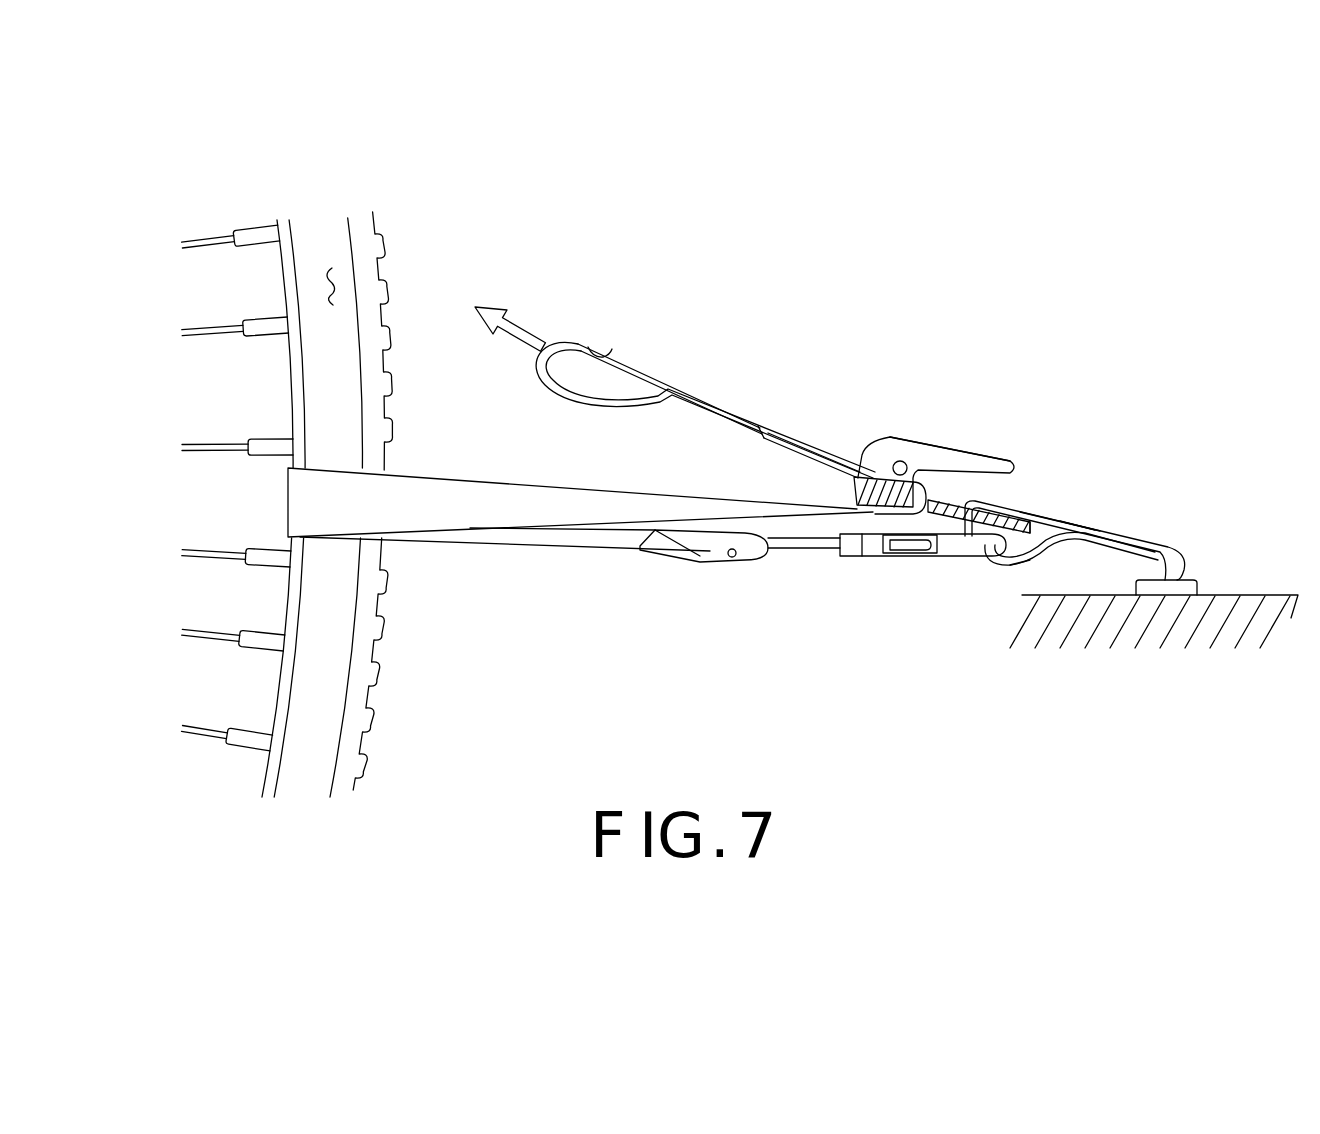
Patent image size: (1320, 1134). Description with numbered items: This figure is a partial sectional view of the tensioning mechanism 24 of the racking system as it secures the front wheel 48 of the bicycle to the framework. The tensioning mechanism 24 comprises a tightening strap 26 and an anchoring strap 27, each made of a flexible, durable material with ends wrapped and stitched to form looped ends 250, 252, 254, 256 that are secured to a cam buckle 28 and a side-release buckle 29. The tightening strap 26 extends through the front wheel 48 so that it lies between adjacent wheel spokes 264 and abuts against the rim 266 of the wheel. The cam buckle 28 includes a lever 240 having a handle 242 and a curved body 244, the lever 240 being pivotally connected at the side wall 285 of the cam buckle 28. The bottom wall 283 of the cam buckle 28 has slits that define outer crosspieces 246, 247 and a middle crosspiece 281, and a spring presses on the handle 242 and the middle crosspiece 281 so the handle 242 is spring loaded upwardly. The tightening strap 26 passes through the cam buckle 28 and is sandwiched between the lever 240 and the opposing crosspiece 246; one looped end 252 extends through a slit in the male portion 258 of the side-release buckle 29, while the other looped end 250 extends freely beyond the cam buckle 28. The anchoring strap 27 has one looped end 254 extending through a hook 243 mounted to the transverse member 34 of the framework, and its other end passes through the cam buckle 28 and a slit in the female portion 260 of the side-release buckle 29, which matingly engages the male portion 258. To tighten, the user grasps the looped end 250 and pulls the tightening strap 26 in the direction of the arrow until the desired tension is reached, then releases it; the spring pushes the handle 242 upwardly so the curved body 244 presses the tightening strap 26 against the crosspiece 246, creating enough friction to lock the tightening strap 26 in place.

The tensioning mechanism 24 is at (1139, 316).
The tightening strap 26 is at (463, 556).
The anchoring strap 27 is at (985, 585).
The cam buckle 28 is at (945, 424).
The side-release buckle 29 is at (857, 572).
The transverse member 34 is at (1293, 613).
The front wheel 48 is at (333, 287).
The lever 240 is at (869, 430).
The handle 242 is at (995, 497).
The hook 243 is at (1190, 577).
The curved body 244 is at (847, 448).
The outer crosspiece 246 is at (857, 490).
The outer crosspiece 247 is at (1033, 497).
The looped end 250 is at (612, 350).
The looped end 252 is at (730, 560).
The looped end 254 is at (1160, 548).
The looped end 256 is at (1040, 530).
The male portion 258 is at (807, 557).
The female portion 260 is at (958, 556).
The wheel spokes 264 is at (222, 442).
The rim 266 is at (289, 552).
The middle crosspiece 281 is at (1028, 490).
The bottom wall 283 is at (1023, 537).
The side wall 285 is at (912, 433).